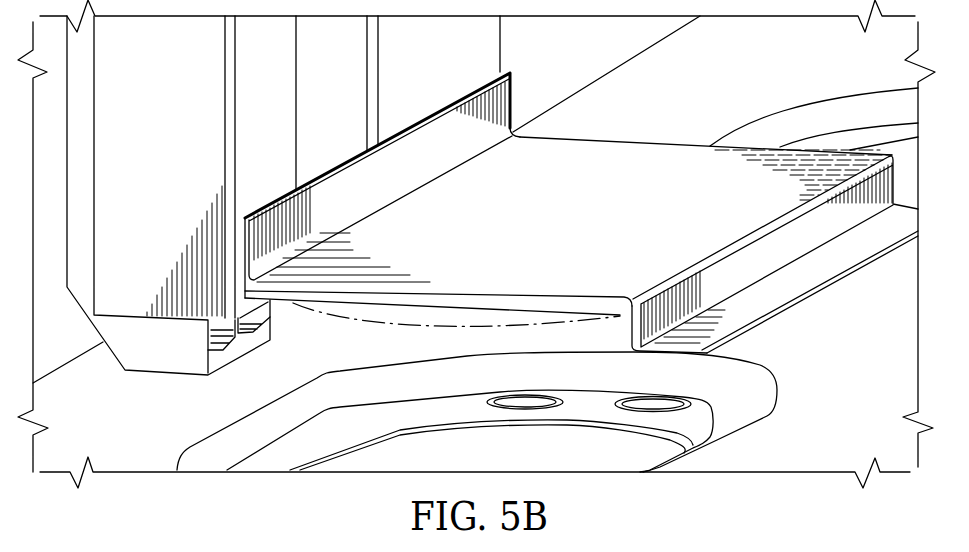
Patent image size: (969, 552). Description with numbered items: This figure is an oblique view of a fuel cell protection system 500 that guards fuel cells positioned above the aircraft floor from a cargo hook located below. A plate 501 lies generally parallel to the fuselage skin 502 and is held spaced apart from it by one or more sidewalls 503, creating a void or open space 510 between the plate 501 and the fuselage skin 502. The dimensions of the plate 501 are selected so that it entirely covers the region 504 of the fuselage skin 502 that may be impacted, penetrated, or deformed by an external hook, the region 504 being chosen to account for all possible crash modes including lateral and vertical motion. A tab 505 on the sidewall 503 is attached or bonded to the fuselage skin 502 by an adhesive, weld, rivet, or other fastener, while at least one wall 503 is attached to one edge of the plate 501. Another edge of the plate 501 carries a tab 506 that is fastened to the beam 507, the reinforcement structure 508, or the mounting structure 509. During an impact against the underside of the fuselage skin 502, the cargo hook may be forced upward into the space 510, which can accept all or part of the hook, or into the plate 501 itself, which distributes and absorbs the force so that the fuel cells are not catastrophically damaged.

The fuel cell protection system 500 is at (659, 122).
The plate 501 is at (608, 210).
The fuselage skin 502 is at (887, 406).
The sidewall 503 is at (755, 260).
The region 504 is at (295, 303).
The tab 505 is at (798, 287).
The tab 506 is at (438, 130).
The beam 507 is at (50, 361).
The reinforcement structure 508 is at (80, 83).
The mounting structure 509 is at (282, 68).
The space 510 is at (599, 330).